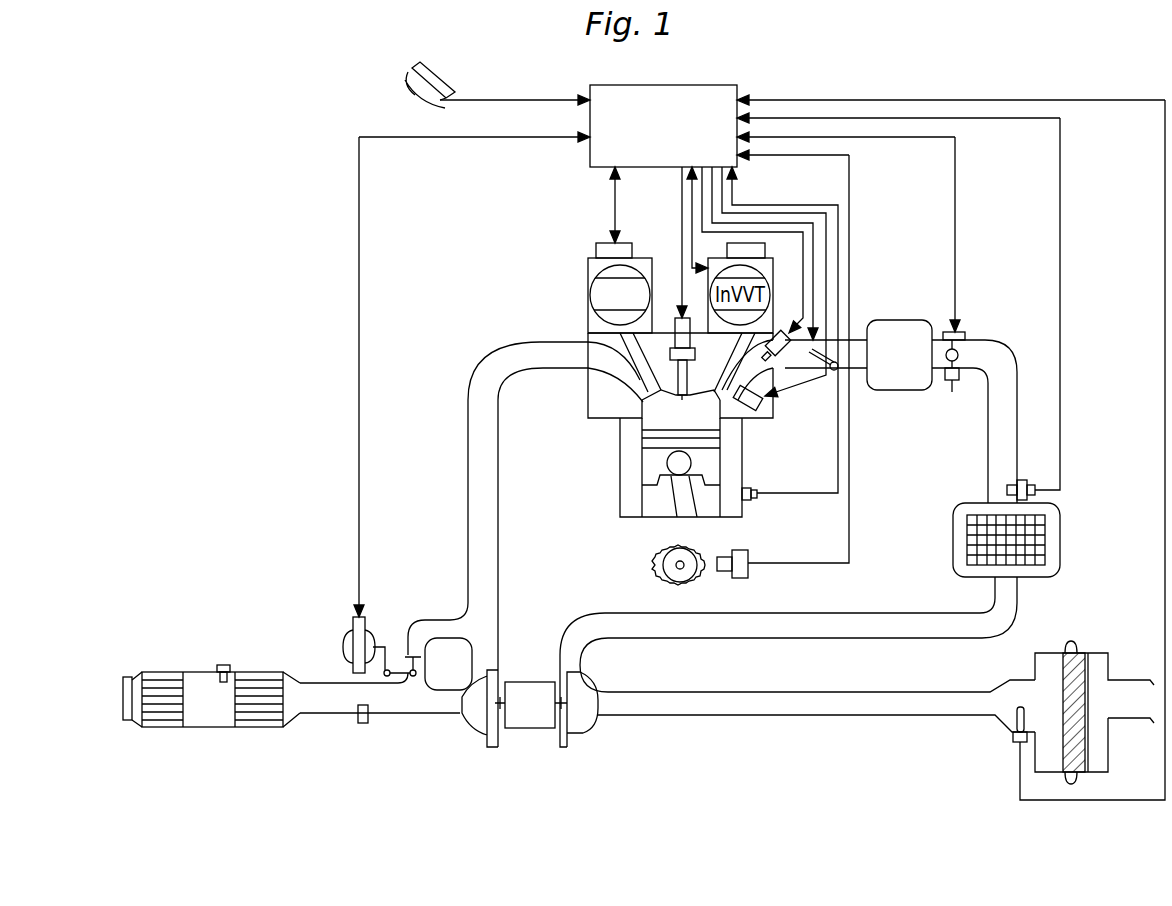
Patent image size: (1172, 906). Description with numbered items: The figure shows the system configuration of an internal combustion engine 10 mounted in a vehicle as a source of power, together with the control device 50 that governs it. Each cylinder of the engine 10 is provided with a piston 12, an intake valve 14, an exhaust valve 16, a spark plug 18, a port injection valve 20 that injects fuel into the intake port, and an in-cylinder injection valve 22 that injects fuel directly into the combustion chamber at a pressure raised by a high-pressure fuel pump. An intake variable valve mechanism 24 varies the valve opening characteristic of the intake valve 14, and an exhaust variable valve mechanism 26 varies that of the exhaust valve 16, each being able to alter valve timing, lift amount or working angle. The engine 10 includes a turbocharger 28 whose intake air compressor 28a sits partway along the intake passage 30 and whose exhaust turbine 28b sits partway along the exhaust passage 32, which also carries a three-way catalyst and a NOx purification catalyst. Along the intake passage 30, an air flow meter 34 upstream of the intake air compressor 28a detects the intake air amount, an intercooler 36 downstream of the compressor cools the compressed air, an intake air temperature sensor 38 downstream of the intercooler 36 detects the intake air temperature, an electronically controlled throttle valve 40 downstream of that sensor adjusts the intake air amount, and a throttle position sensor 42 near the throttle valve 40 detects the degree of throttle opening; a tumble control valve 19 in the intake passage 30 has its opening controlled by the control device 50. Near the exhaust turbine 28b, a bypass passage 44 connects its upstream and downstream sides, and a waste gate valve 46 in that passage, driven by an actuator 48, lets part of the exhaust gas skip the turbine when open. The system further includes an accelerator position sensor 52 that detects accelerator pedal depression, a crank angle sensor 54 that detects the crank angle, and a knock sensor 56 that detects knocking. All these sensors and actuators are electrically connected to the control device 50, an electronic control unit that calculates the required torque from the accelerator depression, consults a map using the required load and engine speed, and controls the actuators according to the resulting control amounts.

The internal combustion engine 10 is at (600, 455).
The piston 12 is at (640, 475).
The intake valve 14 is at (740, 417).
The exhaust valve 16 is at (633, 378).
The spark plug 18 is at (672, 307).
The tumble control valve 19 is at (855, 345).
The port injection valve 20 is at (798, 372).
The in-cylinder injection valve 22 is at (752, 410).
The intake variable valve mechanism 24 is at (775, 295).
The exhaust variable valve mechanism 26 is at (588, 292).
The turbocharger 28 is at (528, 741).
The intake air compressor 28a is at (578, 720).
The exhaust turbine 28b is at (478, 718).
The intake passage 30 is at (873, 392).
The exhaust passage 32 is at (468, 512).
The air flow meter 34 is at (1013, 737).
The intercooler 36 is at (1062, 545).
The intake air temperature sensor 38 is at (1020, 478).
The throttle valve 40 is at (962, 332).
The throttle position sensor 42 is at (952, 385).
The bypass passage 44 is at (410, 618).
The waste gate valve 46 is at (413, 680).
The actuator 48 is at (345, 640).
The control device 50 is at (722, 85).
The accelerator position sensor 52 is at (442, 95).
The crank angle sensor 54 is at (750, 552).
The knock sensor 56 is at (760, 500).